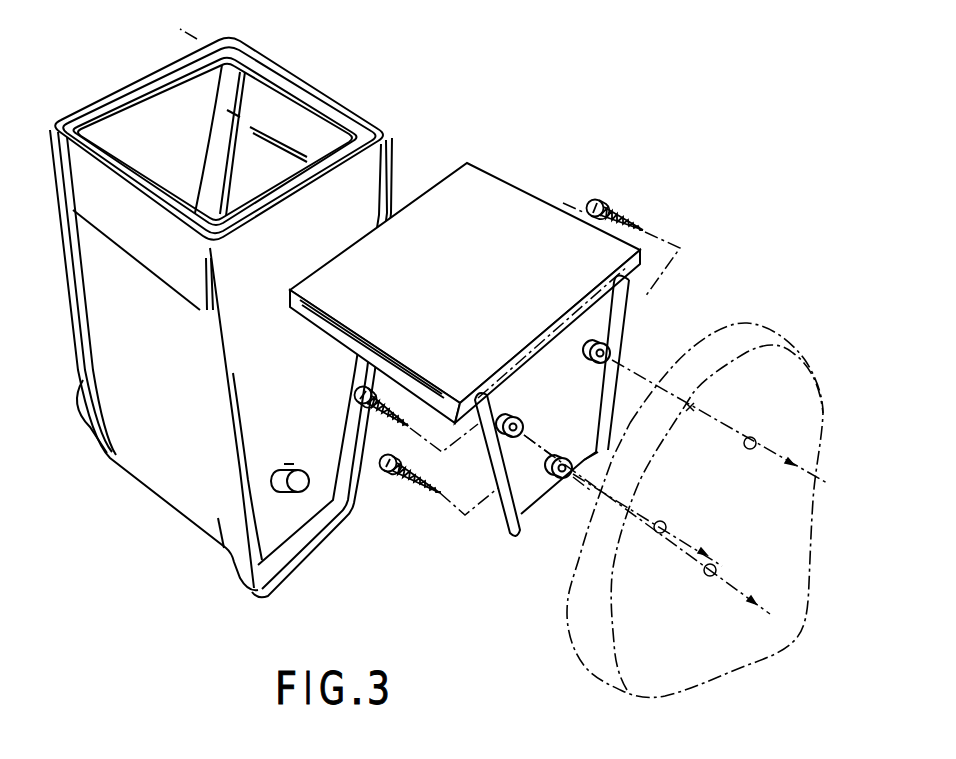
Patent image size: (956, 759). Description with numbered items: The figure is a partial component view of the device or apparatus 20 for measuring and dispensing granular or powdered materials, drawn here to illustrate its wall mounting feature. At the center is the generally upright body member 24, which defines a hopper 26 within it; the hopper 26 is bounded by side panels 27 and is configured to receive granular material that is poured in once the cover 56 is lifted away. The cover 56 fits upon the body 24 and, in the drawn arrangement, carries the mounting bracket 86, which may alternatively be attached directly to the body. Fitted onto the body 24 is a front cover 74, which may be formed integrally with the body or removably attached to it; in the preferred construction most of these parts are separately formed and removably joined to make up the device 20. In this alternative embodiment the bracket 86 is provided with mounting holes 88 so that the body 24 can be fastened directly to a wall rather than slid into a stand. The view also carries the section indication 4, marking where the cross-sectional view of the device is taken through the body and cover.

The section line 4- 4 is at (175, 27).
The device or apparatus 20 is at (221, 318).
The body member 24 is at (156, 354).
The hopper 26 is at (286, 113).
The side panels 27 is at (268, 182).
The cover 56 is at (497, 184).
The front cover 74 is at (96, 97).
The mounting bracket 86 is at (536, 500).
The mounting holes 88 is at (612, 350).